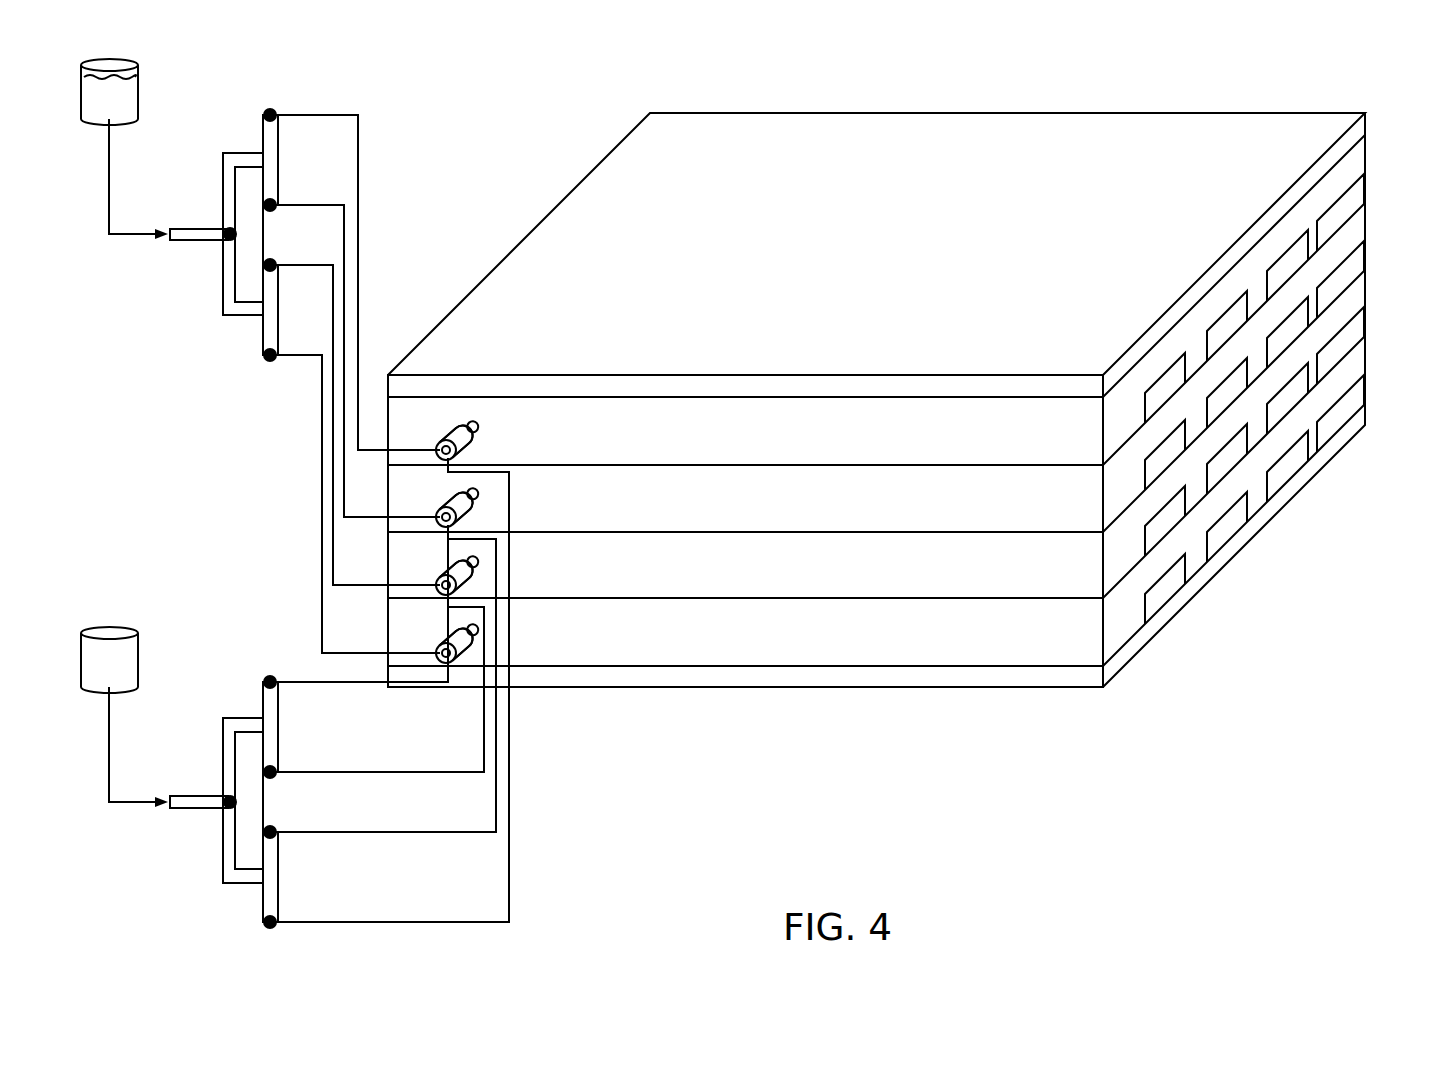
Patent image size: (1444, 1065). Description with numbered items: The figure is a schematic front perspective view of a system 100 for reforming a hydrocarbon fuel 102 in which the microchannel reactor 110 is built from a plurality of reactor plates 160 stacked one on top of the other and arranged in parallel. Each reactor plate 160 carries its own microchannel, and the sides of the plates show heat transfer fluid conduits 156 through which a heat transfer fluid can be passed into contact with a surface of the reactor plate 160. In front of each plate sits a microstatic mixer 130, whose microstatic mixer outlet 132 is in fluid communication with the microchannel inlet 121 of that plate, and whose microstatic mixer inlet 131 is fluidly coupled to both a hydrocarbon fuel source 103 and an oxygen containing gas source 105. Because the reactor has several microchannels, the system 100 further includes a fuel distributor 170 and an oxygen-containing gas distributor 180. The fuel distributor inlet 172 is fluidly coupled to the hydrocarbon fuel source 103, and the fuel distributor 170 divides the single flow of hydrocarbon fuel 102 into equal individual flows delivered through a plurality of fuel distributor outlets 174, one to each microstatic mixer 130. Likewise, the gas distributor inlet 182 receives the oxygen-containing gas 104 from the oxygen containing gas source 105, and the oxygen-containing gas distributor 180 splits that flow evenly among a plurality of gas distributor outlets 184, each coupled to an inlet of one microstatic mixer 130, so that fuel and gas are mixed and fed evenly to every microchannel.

The system 100 is at (1228, 87).
The hydrocarbon fuel 102 is at (138, 237).
The hydrocarbon fuel source 103 is at (138, 95).
The oxygen-containing gas 104 is at (138, 805).
The oxygen containing gas source 105 is at (138, 661).
The microchannel reactor 110 is at (578, 185).
The microchannel inlet 121 is at (476, 421).
The microstatic mixer 130 is at (474, 444).
The microstatic mixer inlet 131 is at (438, 445).
The microstatic mixer outlet 132 is at (482, 430).
The heat transfer fluid conduits 156 is at (1357, 197).
The reactor plates 160 is at (910, 445).
The fuel distributor 170 is at (223, 187).
The fuel distributor inlet 172 is at (240, 233).
The fuel distributor outlets 174 is at (270, 112).
The oxygen-containing gas distributor 180 is at (223, 753).
The gas distributor inlet 182 is at (240, 802).
The gas distributor outlets 184 is at (270, 678).